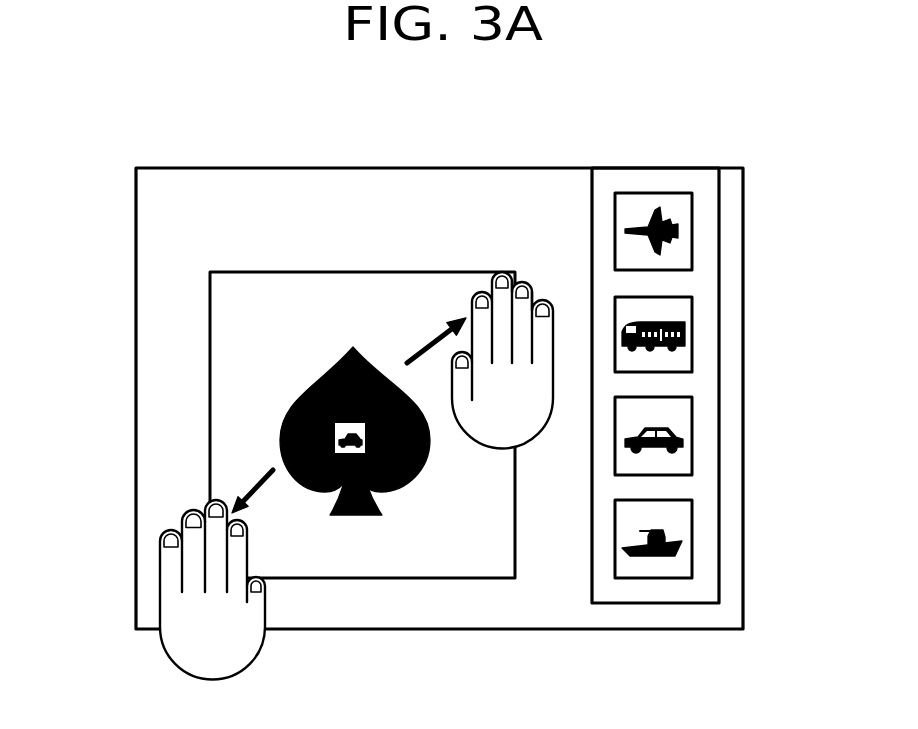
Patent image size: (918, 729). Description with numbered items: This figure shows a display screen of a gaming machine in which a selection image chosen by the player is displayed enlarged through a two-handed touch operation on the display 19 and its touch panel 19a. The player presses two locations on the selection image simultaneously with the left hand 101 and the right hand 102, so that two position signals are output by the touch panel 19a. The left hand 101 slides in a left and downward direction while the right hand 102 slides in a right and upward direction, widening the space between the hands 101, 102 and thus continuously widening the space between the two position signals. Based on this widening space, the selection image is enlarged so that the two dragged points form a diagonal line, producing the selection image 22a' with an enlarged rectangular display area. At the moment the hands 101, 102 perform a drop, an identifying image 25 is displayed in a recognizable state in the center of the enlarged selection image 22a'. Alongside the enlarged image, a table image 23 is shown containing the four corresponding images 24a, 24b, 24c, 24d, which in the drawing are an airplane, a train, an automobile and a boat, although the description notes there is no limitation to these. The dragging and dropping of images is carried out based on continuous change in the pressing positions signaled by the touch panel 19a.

The display 19 is at (459, 353).
The touch panel 19a is at (679, 150).
The selection image 22a' is at (362, 388).
The table image 23 is at (719, 390).
The corresponding image 24a is at (692, 229).
The corresponding image 24b is at (692, 328).
The corresponding image 24c is at (692, 430).
The corresponding image 24d is at (692, 533).
The identifying image 25 is at (290, 427).
The left hand 101 is at (160, 605).
The right hand 102 is at (548, 300).